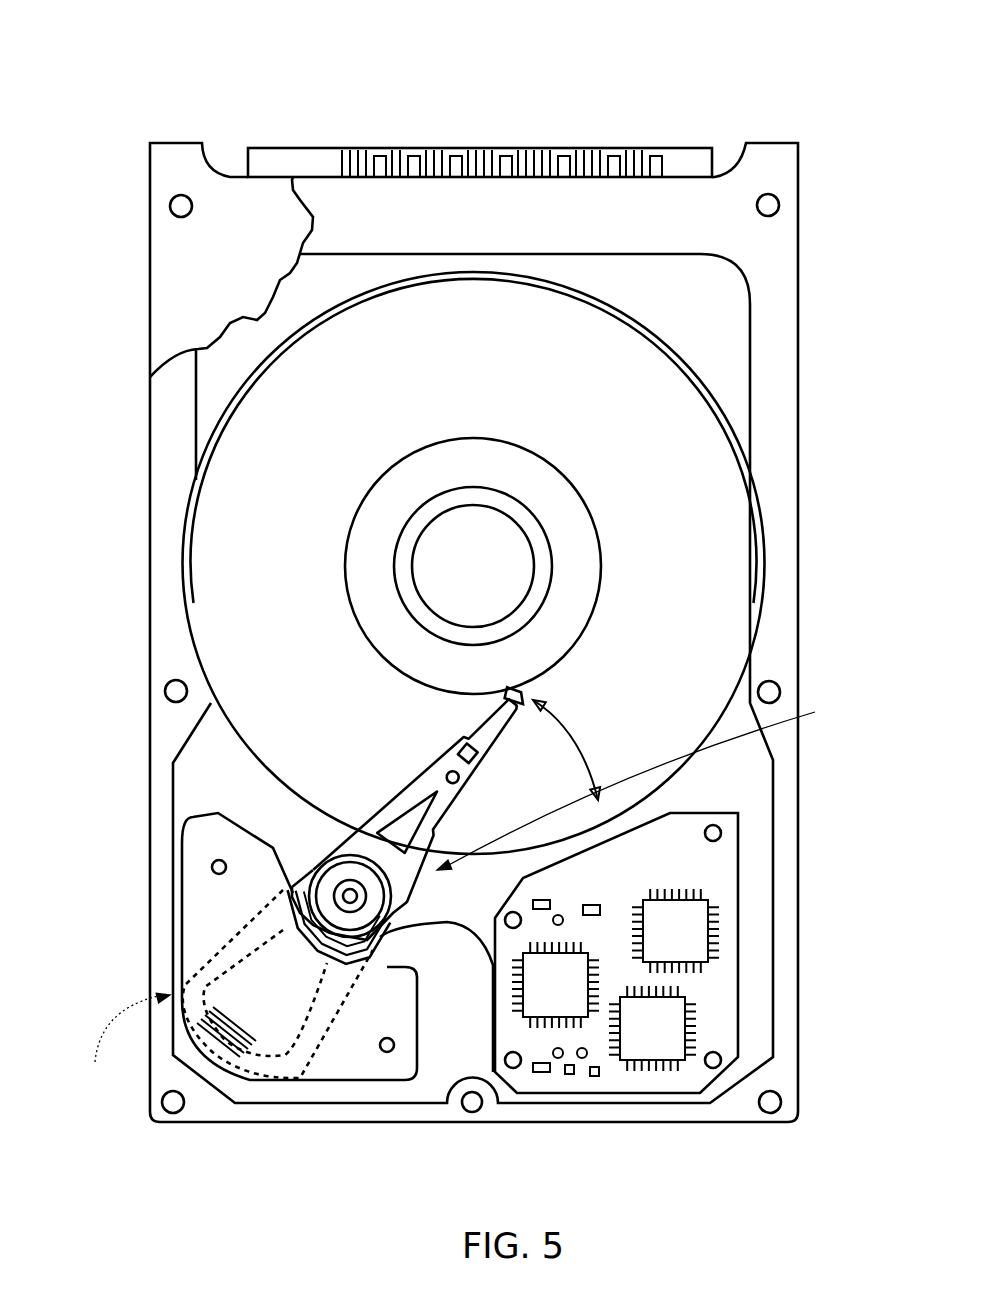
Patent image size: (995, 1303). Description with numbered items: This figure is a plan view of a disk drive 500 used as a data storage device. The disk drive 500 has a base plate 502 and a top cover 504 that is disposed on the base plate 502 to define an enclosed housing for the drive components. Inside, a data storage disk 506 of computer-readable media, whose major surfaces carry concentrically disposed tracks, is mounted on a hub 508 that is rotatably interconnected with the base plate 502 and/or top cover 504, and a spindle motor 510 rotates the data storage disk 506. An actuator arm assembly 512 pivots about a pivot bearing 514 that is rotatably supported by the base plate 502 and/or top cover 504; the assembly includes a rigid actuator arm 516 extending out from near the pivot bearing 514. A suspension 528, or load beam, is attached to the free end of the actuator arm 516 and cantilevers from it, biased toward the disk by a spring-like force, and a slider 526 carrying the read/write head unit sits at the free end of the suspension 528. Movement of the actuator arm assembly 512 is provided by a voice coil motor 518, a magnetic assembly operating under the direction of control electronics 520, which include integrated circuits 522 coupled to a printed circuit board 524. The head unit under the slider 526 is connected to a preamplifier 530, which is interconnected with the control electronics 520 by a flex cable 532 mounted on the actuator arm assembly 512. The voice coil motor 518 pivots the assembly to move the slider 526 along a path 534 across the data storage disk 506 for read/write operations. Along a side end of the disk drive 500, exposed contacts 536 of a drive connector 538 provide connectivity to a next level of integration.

The disk drive 500 is at (143, 46).
The base plate 502 is at (173, 643).
The top cover 504 is at (218, 266).
The data storage disk 506 is at (318, 447).
The hub 508 is at (352, 515).
The spindle motor 510 is at (445, 584).
The actuator arm assembly 512 is at (647, 781).
The pivot bearing 514 is at (327, 898).
The actuator arm 516 is at (461, 777).
The voice coil motor 518 is at (127, 1047).
The control electronics 520 is at (679, 1002).
The integrated circuit 522 is at (680, 927).
The printed circuit board 524 is at (712, 993).
The slider 526 is at (522, 693).
The suspension 528 is at (467, 735).
The preamplifier 530 is at (390, 920).
The flex cable 532 is at (420, 917).
The path 534 is at (580, 740).
The exposed contacts 536 is at (670, 155).
The drive connector 538 is at (258, 158).